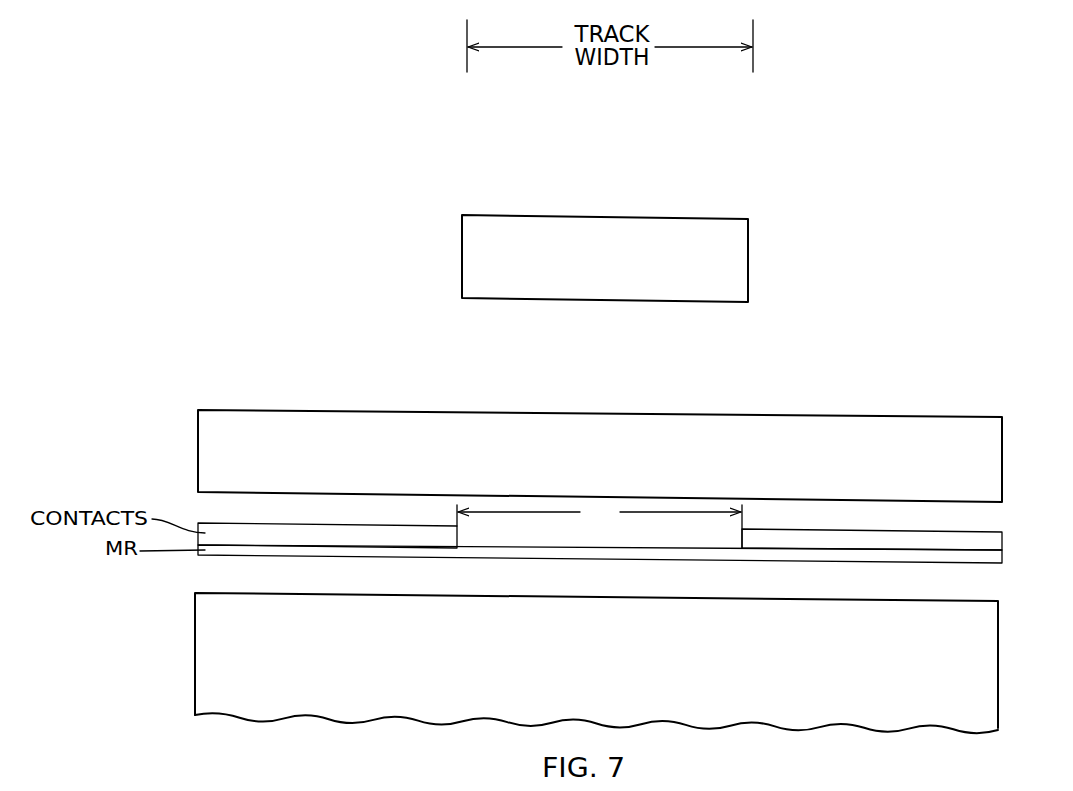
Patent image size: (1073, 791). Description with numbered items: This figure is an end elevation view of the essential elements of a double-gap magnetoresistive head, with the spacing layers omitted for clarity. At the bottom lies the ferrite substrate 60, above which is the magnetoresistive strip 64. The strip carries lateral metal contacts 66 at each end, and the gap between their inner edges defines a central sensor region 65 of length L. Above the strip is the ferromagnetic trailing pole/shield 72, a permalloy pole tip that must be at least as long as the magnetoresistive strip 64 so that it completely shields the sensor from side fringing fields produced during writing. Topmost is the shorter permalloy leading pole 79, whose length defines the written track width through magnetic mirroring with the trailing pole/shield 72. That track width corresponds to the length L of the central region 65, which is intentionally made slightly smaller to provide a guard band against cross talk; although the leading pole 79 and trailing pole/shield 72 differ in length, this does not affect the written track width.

The leading pole 79 is at (735, 261).
The trailing pole/shield 72 is at (985, 465).
The central sensor region 65 is at (718, 548).
The lateral metal contacts 66 is at (992, 543).
The magnetoresistive strip 64 is at (993, 561).
The ferrite substrate 60 is at (975, 665).